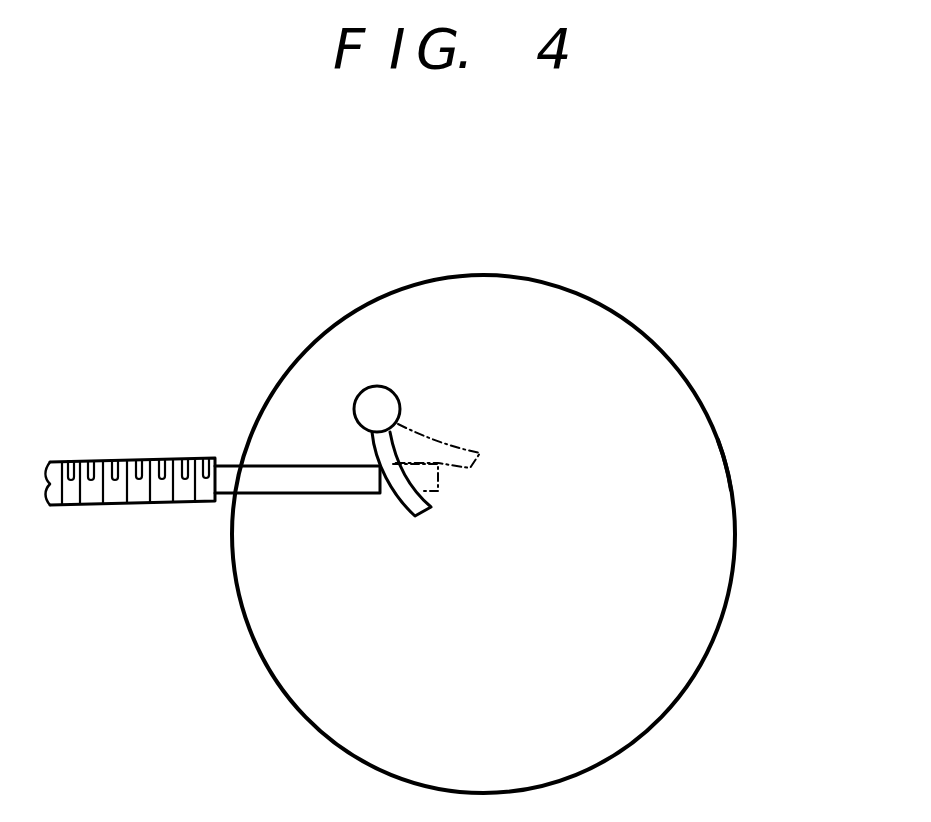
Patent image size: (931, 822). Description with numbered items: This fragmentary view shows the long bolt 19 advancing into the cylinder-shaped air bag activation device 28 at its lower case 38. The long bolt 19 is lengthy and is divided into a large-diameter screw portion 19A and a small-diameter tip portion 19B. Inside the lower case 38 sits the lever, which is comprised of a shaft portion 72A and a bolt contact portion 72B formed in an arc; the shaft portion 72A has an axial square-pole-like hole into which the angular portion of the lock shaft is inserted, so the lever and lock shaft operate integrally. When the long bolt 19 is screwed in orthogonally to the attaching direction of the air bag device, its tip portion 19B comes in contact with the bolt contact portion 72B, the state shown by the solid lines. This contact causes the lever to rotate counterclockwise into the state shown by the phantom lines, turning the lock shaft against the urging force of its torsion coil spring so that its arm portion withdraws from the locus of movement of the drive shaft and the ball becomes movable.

The long bolt 19 is at (161, 449).
The screw portion 19A is at (138, 495).
The tip portion 19B is at (298, 483).
The air bag activation device 28 is at (692, 379).
The lower case 38 is at (705, 472).
The shaft portion 72A is at (400, 394).
The bolt contact portion 72B is at (398, 503).